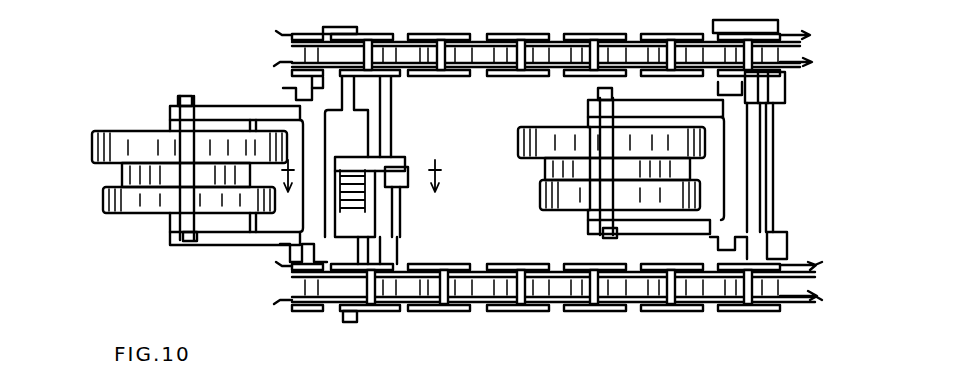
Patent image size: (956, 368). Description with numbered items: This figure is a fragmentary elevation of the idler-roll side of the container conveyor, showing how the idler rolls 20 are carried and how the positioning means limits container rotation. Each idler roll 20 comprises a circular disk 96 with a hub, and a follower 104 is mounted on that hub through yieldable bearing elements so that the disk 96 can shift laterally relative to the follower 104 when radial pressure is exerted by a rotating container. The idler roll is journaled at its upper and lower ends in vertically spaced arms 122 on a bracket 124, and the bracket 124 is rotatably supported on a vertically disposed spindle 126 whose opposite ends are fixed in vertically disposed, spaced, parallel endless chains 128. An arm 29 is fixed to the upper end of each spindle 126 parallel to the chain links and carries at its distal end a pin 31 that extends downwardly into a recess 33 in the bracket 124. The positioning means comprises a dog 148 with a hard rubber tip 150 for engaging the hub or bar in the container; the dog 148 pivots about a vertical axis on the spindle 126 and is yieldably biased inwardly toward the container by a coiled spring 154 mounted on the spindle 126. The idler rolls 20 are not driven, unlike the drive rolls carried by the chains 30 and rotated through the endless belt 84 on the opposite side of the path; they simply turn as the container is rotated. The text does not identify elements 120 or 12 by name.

The endless belt 84 is at (103, 0).
The arm 29 is at (334, 27).
The endless chains 128 is at (506, 34).
The idler roll 20 is at (64, 156).
The circular disk 96 is at (122, 132).
The shaft end 120 is at (176, 100).
The arms 122 is at (206, 112).
The pin 31 is at (300, 80).
The recess 33 is at (292, 96).
The spindle 126 is at (352, 124).
The dog 148 is at (372, 158).
The direction of travel 12 is at (360, 176).
The hard rubber tip 150 is at (404, 186).
The coiled spring 154 is at (368, 206).
The follower 104 is at (104, 206).
The bracket 124 is at (305, 210).
The endless chains 30 is at (488, 358).